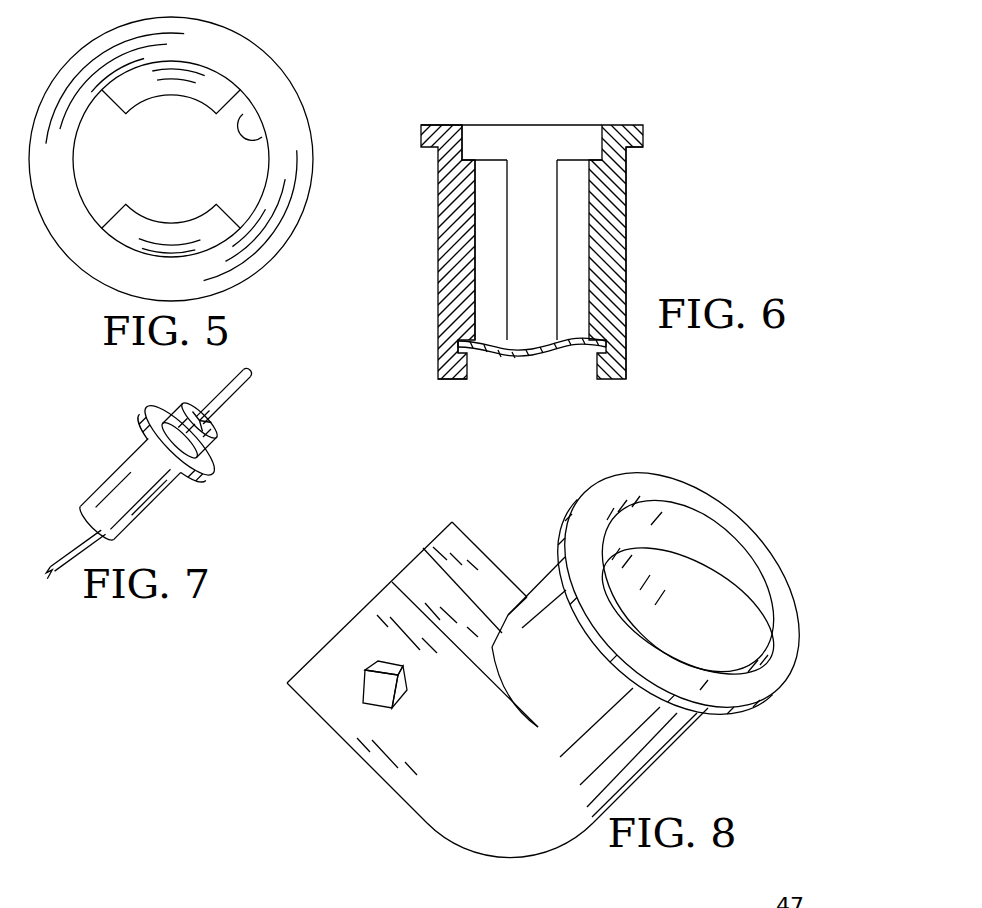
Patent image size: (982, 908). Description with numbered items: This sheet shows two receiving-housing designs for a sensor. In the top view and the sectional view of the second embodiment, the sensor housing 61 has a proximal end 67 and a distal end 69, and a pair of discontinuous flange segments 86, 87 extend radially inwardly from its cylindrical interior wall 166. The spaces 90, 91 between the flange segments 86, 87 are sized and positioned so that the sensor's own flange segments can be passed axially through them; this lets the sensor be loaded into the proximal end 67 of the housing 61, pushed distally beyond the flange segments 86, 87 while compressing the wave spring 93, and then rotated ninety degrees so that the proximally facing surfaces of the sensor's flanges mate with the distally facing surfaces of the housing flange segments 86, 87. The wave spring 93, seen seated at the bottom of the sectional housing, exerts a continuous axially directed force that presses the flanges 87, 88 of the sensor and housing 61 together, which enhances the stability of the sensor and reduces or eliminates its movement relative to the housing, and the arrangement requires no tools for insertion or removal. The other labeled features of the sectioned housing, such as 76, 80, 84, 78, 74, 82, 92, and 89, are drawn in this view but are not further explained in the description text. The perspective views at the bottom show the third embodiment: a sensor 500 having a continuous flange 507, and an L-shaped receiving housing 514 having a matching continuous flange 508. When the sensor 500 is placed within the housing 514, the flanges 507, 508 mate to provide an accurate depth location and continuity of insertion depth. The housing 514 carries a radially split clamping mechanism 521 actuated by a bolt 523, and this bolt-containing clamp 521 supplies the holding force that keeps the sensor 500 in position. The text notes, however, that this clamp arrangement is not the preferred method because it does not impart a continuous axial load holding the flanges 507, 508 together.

In FIG. 5, the flange segment 86 is at (222, 88).
In FIG. 5, the flange 88 is at (180, 95).
In FIG. 5, the flange segment 87 is at (202, 230).
In FIG. 5, the arcuate slot 89 is at (142, 217).
In FIG. 5, the space 90 is at (78, 173).
In FIG. 5, the space 91 is at (268, 162).
In FIG. 5, the cylindrical interior wall 166 is at (252, 112).
In FIG. 6, the sensor housing 61 is at (642, 242).
In FIG. 6, the proximal end 67 is at (563, 83).
In FIG. 6, the flange 76 is at (658, 122).
In FIG. 6, the flange top surface 80 is at (470, 125).
In FIG. 6, the counterbore 84 is at (464, 158).
In FIG. 6, the annular groove 78 is at (487, 245).
In FIG. 6, the outer wall 74 is at (627, 212).
In FIG. 6, the foot 92 is at (472, 358).
In FIG. 6, the wave spring 93 is at (505, 355).
In FIG. 6, the resilient disc 82 is at (538, 308).
In FIG. 6, the distal end 69 is at (533, 397).
In FIG. 7, the sensor 500 is at (168, 525).
In FIG. 7, the continuous flange 507 is at (218, 472).
In FIG. 8, the L-shaped receiving housing 514 is at (698, 762).
In FIG. 8, the radially split clamping mechanism 521 is at (378, 580).
In FIG. 8, the bolt 523 is at (363, 680).
In FIG. 8, the continuous flange 508 is at (727, 623).